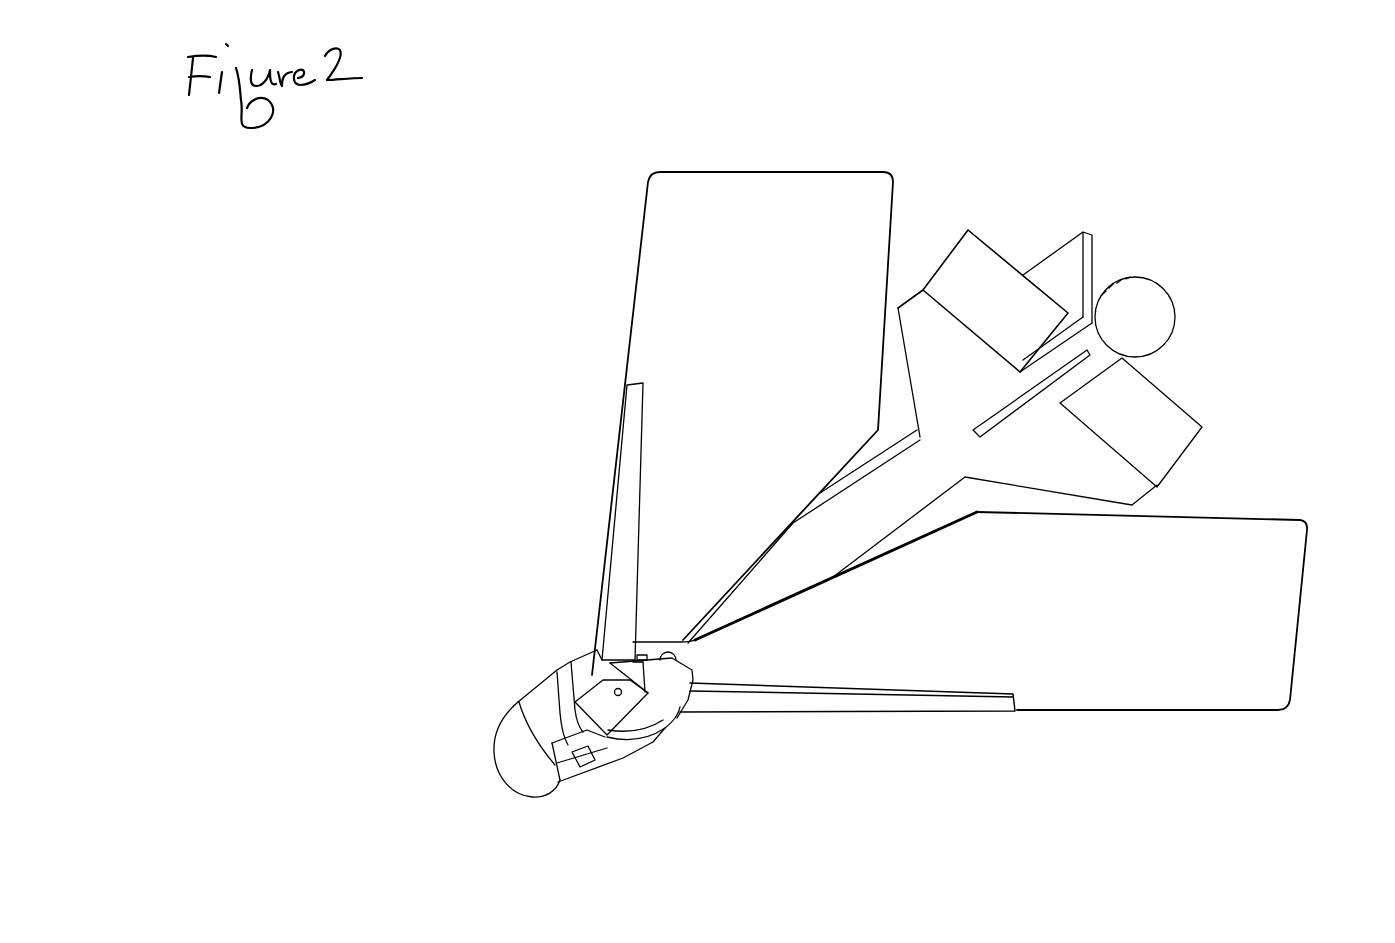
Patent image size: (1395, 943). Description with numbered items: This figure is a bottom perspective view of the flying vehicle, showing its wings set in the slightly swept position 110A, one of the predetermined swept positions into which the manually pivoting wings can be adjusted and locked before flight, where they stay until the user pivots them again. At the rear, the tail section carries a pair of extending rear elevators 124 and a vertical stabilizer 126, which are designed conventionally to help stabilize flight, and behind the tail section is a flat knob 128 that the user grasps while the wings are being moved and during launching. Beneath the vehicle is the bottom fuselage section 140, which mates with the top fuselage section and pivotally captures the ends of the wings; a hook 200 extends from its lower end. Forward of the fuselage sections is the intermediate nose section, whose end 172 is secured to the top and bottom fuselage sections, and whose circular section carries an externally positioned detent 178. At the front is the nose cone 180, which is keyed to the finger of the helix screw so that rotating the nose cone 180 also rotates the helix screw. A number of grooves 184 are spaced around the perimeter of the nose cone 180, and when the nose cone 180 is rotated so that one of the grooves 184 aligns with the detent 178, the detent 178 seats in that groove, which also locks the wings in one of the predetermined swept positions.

The slightly swept wing position 110A is at (645, 237).
The rear elevators 124 is at (1175, 410).
The vertical stabilizer 126 is at (1072, 243).
The flat knob 128 is at (1150, 300).
The bottom fuselage section 140 is at (657, 755).
The end of intermediate nose section 172 is at (560, 672).
The detent 178 is at (592, 767).
The nose cone 180 is at (497, 761).
The grooves 184 is at (530, 686).
The hook 200 is at (657, 732).